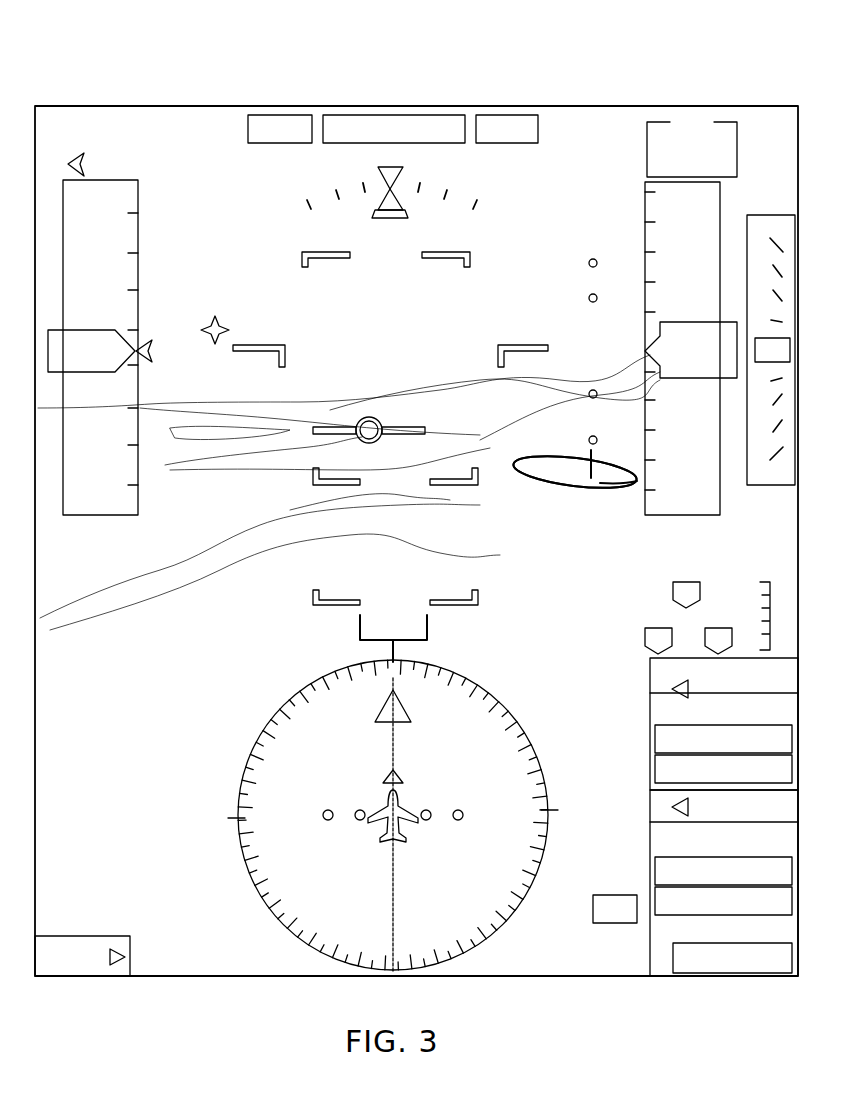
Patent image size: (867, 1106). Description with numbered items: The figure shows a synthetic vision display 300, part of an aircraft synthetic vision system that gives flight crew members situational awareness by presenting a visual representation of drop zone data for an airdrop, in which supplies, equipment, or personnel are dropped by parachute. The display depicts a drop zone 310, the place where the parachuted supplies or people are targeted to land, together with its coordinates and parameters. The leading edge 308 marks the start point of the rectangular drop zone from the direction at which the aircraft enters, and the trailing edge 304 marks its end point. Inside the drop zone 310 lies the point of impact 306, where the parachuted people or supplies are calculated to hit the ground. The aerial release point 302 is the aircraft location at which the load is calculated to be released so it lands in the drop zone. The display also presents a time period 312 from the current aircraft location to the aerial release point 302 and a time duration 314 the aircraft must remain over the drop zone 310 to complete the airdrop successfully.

The synthetic vision display 300 is at (667, 88).
The aerial release point 302 is at (214, 300).
The trailing edge 304 is at (530, 459).
The point of impact 306 is at (600, 460).
The leading edge 308 is at (605, 490).
The drop zone 310 is at (548, 470).
The time period 312 is at (578, 732).
The time duration 314 is at (650, 818).